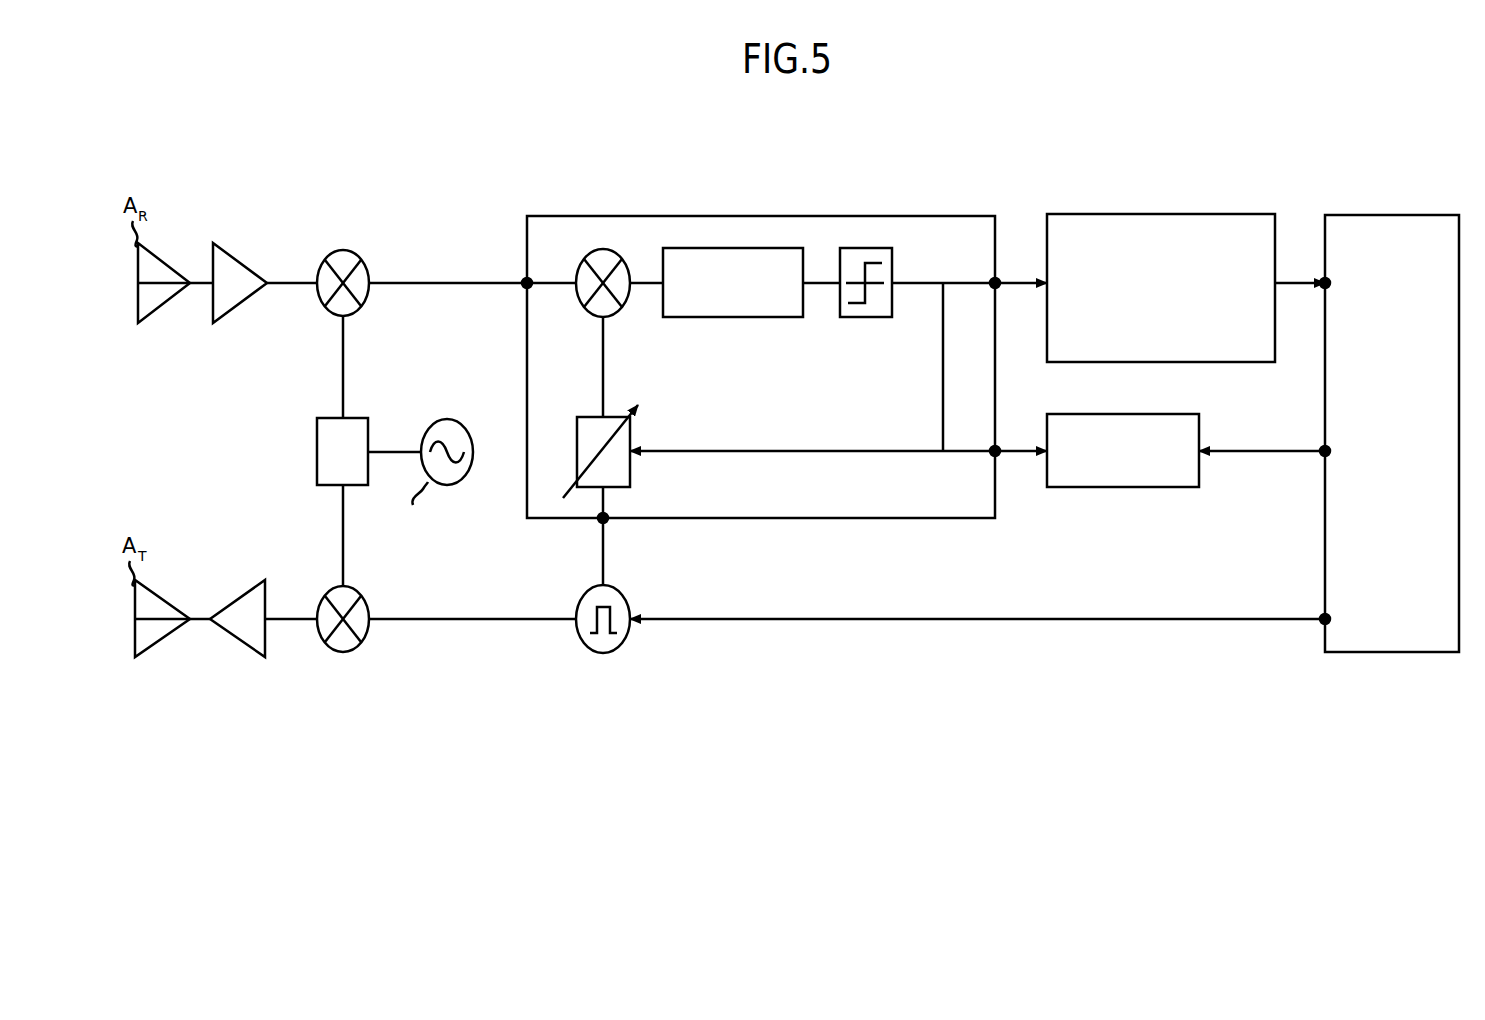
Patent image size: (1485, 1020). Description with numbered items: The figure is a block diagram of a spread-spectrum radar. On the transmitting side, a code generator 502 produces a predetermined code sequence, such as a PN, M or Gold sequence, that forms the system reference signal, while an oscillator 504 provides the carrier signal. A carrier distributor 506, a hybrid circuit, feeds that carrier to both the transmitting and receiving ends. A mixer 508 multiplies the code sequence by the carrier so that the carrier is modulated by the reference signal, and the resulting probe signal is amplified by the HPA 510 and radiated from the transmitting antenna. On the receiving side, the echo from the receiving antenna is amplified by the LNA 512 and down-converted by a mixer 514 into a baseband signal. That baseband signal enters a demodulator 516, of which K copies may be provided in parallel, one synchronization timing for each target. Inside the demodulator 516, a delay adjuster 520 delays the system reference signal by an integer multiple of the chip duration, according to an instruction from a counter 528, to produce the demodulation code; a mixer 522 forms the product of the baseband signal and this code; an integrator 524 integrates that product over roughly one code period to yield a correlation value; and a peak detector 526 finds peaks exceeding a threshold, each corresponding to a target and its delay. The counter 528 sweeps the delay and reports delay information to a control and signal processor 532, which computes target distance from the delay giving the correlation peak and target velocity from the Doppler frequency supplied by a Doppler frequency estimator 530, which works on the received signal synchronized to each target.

The code generator 502 is at (603, 653).
The oscillator 504 is at (447, 419).
The carrier distributor 506 is at (317, 452).
The mixer 508 is at (342, 653).
The HPA (High Power Amplifier) 510 is at (238, 643).
The LNA (Low Noise Amplifier) 512 is at (267, 247).
The mixer 514 is at (373, 233).
The demodulator 516 is at (772, 216).
The delay adjuster 520 is at (630, 477).
The mixer 522 is at (592, 315).
The integrator 524 is at (722, 317).
The peak detector 526 is at (863, 317).
The counter 528 is at (1098, 413).
The Doppler frequency estimator 530 is at (1128, 214).
The control and signal processor 532 is at (1345, 215).